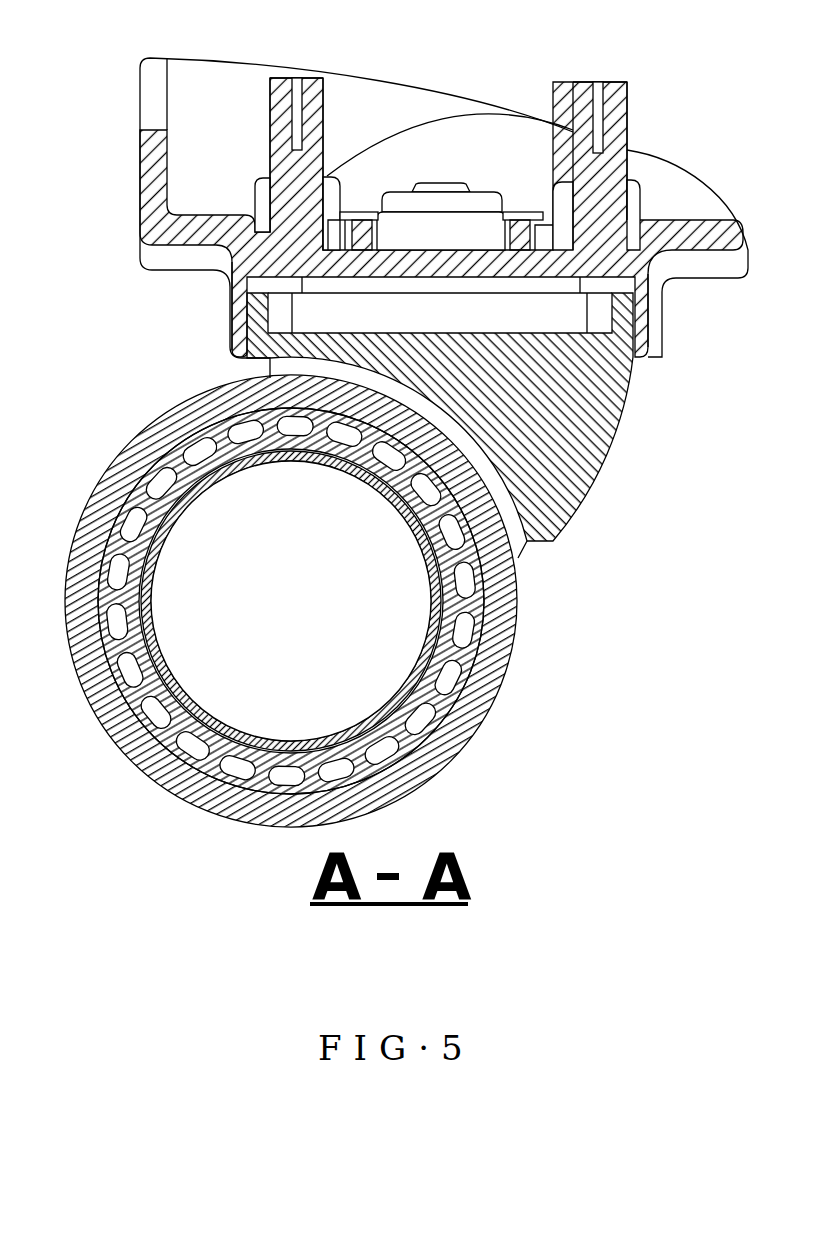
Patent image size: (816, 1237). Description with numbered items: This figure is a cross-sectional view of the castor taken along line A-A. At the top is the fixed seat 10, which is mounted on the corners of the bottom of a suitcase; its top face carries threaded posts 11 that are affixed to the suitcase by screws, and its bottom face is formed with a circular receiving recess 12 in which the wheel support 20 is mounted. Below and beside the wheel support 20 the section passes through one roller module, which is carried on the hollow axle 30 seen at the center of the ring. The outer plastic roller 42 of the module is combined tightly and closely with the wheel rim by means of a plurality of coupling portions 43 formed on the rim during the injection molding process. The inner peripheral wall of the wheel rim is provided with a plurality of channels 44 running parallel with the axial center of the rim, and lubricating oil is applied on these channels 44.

The fixed seat 10 is at (150, 186).
The threaded posts 11 is at (297, 80).
The receiving recess 12 is at (240, 316).
The wheel support 20 is at (578, 474).
The hollow axle 30 is at (410, 687).
The roller 42 is at (140, 452).
The coupling portions 43 is at (130, 526).
The channels 44 is at (193, 712).